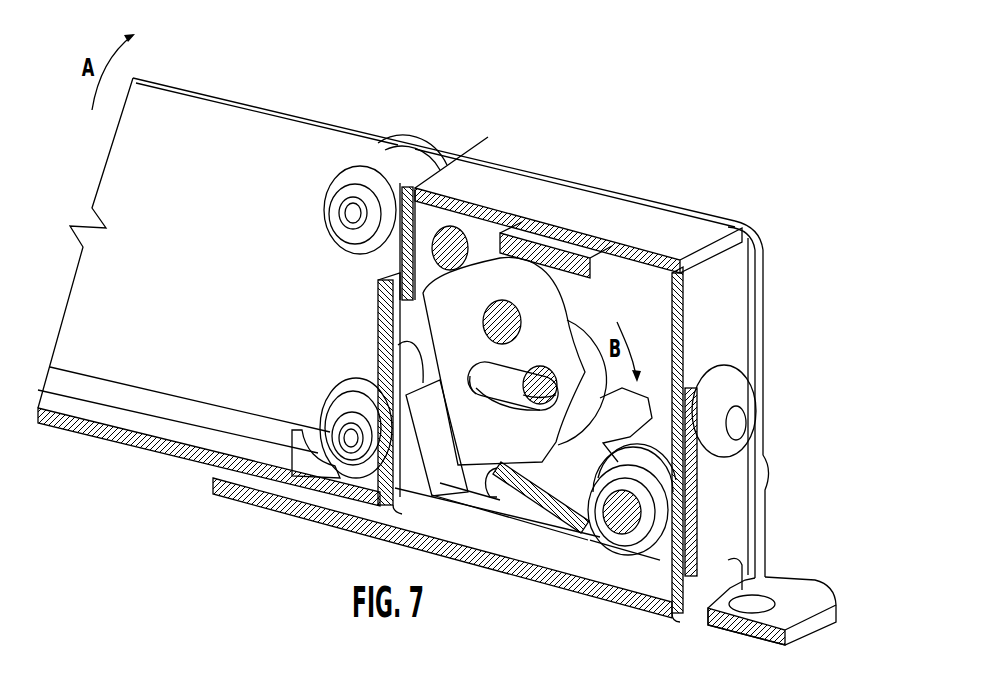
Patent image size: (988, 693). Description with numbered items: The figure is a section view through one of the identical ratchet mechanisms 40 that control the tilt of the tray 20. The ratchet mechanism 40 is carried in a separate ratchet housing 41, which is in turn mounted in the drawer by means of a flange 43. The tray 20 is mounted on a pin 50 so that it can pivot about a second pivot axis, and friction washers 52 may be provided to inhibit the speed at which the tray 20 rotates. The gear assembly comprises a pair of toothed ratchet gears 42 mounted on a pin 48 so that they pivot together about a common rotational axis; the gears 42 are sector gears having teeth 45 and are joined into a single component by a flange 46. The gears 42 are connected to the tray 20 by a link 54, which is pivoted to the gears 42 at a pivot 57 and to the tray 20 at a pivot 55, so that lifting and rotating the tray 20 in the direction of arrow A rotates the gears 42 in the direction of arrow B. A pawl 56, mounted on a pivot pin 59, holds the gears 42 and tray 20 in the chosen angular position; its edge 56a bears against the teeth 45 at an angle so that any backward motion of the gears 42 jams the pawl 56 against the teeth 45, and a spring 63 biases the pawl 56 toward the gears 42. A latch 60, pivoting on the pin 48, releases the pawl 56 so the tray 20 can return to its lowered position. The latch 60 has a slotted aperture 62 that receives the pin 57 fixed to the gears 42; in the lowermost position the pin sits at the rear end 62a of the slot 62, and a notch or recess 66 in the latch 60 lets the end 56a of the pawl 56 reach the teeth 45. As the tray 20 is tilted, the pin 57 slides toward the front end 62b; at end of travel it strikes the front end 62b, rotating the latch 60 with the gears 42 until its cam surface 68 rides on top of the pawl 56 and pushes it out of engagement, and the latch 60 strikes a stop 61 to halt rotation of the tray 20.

The tray 20 is at (272, 126).
The ratchet mechanism 40 is at (781, 284).
The ratchet housing 41 is at (745, 316).
The toothed ratchet gears 42 is at (665, 320).
The flange 43 is at (810, 589).
The teeth 45 is at (615, 447).
The flange 46 is at (555, 238).
The pin 48 is at (482, 326).
The pin 50 is at (355, 213).
The friction washers 52 is at (433, 147).
The link 54 is at (433, 432).
The pivot 55 is at (346, 413).
The pawl 56 is at (578, 527).
The edge 56a is at (490, 495).
The pivot / pin 57 is at (552, 405).
The pivot pin 59 is at (623, 567).
The latch 60 is at (553, 286).
The stop 61 is at (477, 233).
The slotted aperture 62 is at (491, 390).
The rear end of slot 62a is at (558, 376).
The front end of slot 62b is at (478, 380).
The spring 63 is at (670, 490).
The notch or recess 66 is at (492, 490).
The cam surface 68 is at (548, 518).